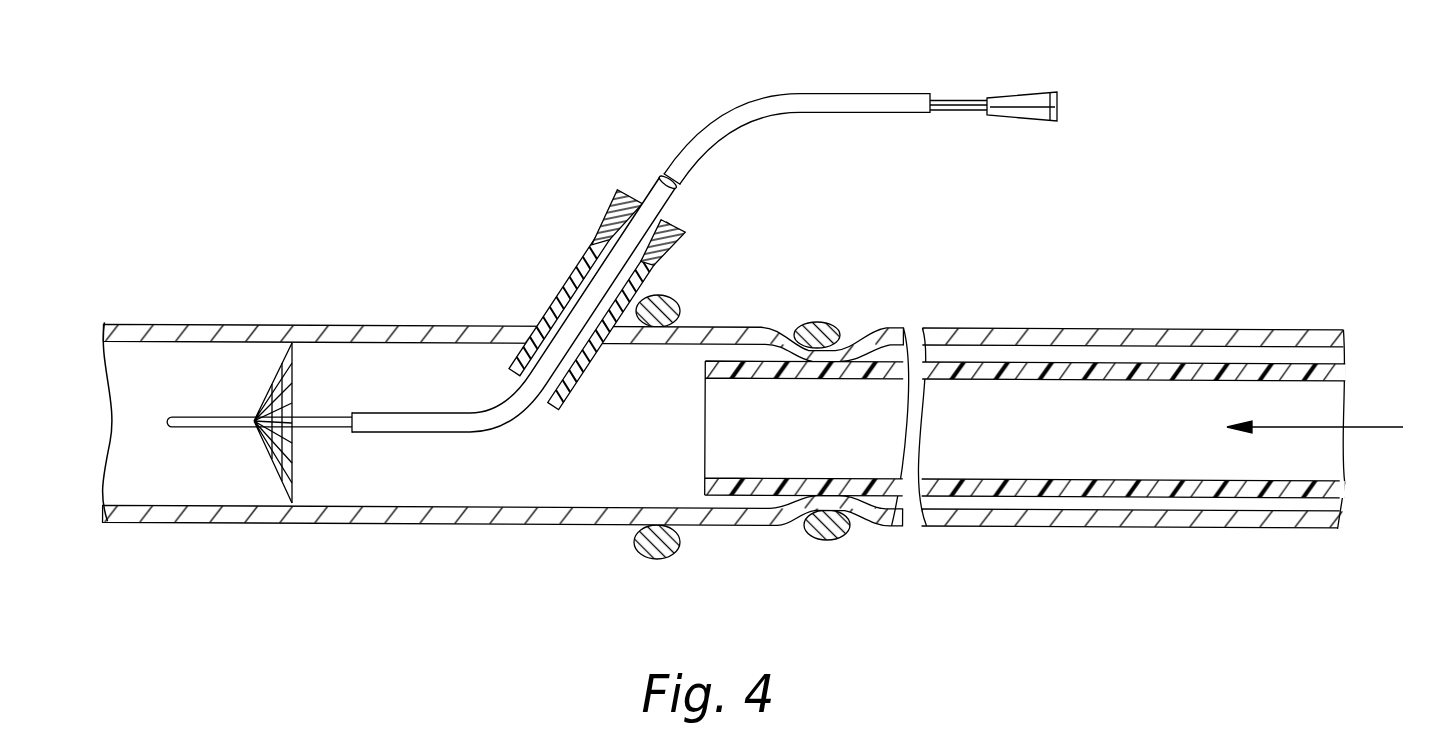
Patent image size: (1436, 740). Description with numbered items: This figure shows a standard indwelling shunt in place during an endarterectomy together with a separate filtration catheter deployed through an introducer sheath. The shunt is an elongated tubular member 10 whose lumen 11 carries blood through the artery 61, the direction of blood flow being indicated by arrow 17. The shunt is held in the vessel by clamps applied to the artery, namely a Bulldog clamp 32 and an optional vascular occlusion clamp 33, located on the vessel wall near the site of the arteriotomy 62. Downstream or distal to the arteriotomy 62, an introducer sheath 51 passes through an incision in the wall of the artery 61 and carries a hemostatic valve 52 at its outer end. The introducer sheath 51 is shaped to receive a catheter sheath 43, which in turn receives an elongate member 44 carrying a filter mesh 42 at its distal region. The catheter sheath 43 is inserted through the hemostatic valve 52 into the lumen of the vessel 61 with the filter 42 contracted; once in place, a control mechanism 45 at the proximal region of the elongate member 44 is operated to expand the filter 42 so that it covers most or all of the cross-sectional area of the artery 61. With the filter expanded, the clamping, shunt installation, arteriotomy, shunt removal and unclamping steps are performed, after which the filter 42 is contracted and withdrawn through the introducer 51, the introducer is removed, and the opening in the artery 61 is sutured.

The elongated tubular member 10 is at (1000, 362).
The lumen 11 is at (1180, 464).
The arrow 17 is at (1384, 427).
The Bulldog clamp 32 is at (826, 322).
The vascular occlusion clamp 33 is at (663, 559).
The filter mesh 42 is at (277, 373).
The catheter sheath 43 is at (752, 97).
The elongate member 44 is at (327, 434).
The mechanism 45 is at (1035, 96).
The introducer sheath 51 is at (584, 265).
The hemostatic valve 52 is at (624, 188).
The artery 61 is at (183, 525).
The arteriotomy 62 is at (1085, 527).